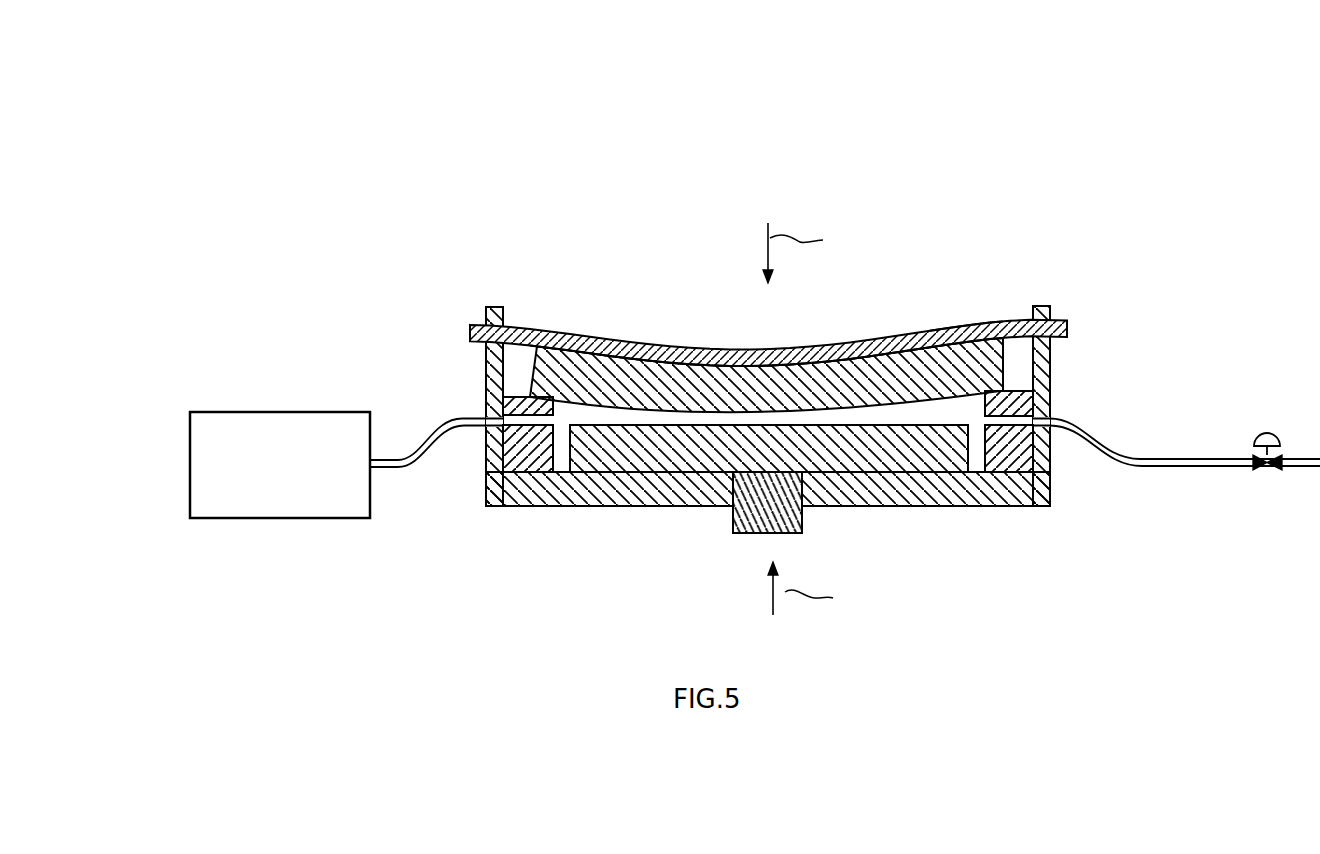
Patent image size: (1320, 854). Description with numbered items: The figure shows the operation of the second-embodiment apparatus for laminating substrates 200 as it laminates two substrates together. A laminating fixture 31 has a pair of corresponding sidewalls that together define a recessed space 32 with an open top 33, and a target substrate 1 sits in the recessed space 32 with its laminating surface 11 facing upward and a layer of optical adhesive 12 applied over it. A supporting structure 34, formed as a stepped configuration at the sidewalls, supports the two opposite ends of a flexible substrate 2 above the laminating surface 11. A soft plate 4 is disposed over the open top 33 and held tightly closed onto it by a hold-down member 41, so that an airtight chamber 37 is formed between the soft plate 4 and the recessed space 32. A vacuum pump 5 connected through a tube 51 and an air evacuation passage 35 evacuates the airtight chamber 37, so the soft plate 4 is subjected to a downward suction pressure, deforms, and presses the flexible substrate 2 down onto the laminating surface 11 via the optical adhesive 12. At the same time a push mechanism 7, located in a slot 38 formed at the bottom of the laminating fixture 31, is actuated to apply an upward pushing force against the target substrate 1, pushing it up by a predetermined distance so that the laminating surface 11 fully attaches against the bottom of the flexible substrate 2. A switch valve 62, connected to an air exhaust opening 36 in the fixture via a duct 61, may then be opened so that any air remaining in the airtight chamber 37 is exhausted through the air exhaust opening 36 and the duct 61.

The apparatus for laminating substrates 200 is at (845, 339).
The target substrate 1 is at (900, 507).
The flexible substrate 2 is at (905, 338).
The soft plate 4 is at (1068, 330).
The vacuum pump 5 is at (190, 430).
The push mechanism 7 is at (735, 513).
The laminating surface 11 is at (608, 507).
The optical adhesive 12 is at (670, 507).
The laminating fixture 31 is at (1013, 507).
The recessed space 32 is at (973, 507).
The open top 33 is at (969, 279).
The supporting structure 34 is at (1050, 390).
The air evacuation passage 35 is at (538, 507).
The air exhaust opening 36 is at (1035, 428).
The airtight chamber 37 is at (522, 345).
The slot 38 is at (803, 507).
The hold-down member 41 is at (1040, 310).
The tube 51 is at (398, 470).
The duct 61 is at (1173, 468).
The switch valve 62 is at (1270, 472).